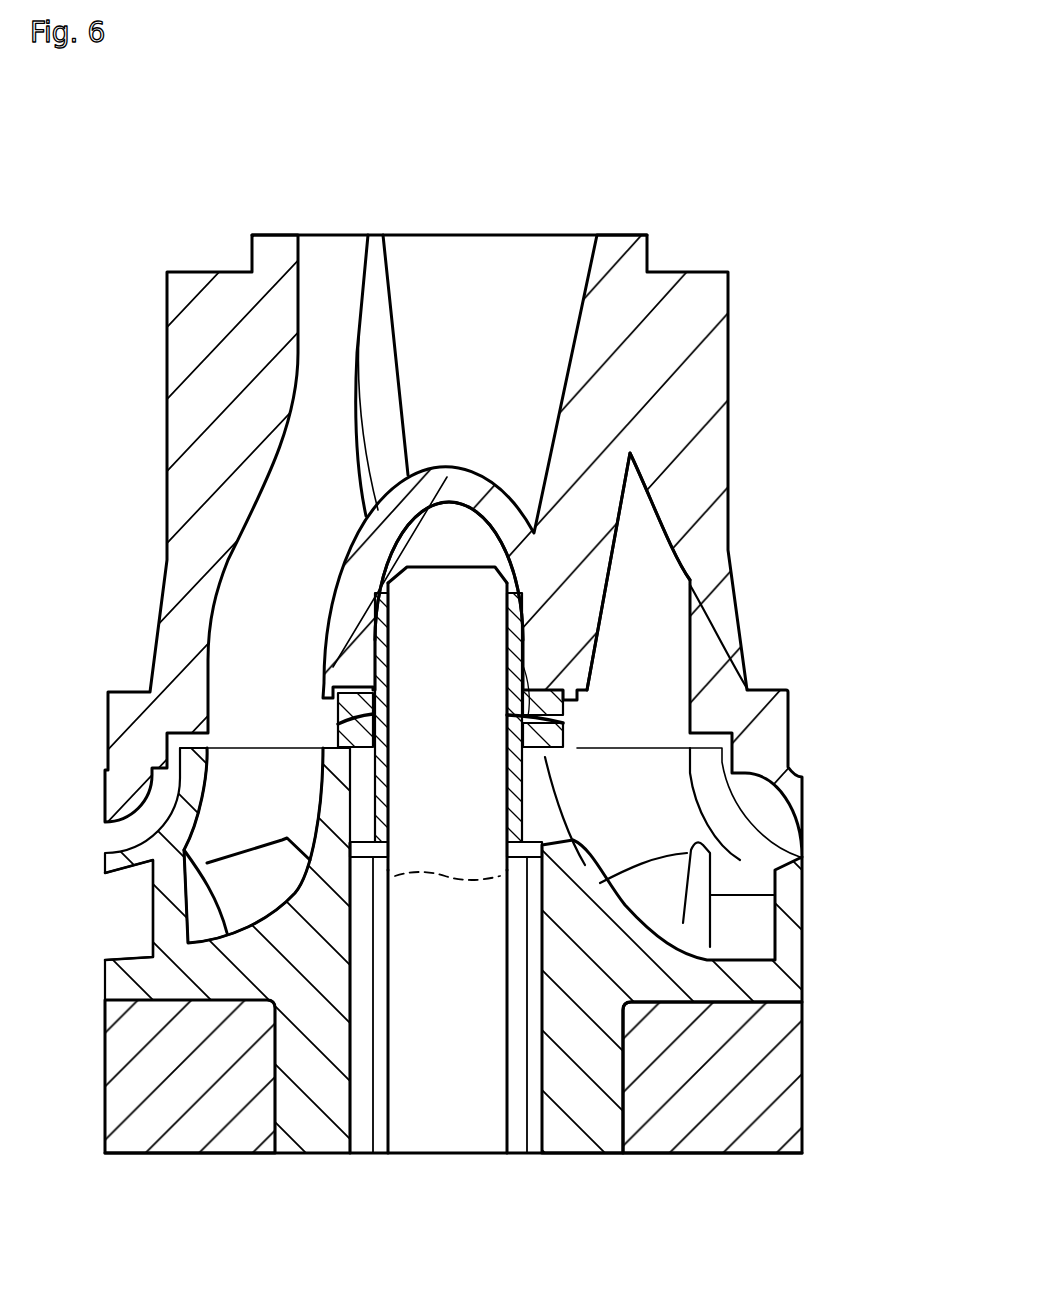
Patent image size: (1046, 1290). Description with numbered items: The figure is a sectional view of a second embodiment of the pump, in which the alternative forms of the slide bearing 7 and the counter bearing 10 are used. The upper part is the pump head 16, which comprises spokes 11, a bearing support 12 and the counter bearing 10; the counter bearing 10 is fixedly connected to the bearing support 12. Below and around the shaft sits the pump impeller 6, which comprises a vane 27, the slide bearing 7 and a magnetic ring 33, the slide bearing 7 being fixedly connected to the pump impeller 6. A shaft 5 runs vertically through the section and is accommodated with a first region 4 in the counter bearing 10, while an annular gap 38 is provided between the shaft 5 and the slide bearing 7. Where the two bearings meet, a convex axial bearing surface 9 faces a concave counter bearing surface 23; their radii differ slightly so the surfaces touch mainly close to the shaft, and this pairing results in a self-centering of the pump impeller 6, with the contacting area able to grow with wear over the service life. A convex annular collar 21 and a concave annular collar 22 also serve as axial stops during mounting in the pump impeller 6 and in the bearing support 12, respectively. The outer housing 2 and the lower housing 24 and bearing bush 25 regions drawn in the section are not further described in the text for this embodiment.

The housing 2 is at (625, 256).
The first region 4 is at (435, 678).
The shaft 5 is at (462, 927).
The pump impeller 6 is at (730, 828).
The slide bearing 7 is at (368, 766).
The convex axial bearing surface 9 is at (518, 647).
The counter bearing 10 is at (373, 641).
The spokes 11 is at (385, 413).
The bearing support 12 is at (533, 640).
The pump head 16 is at (151, 591).
The convex annular collar 21 is at (540, 750).
The concave annular collar 22 is at (563, 688).
The concave counter bearing surface 23 is at (377, 723).
The bearing housing 24 is at (570, 840).
The bearing bush 25 is at (528, 613).
The vane 27 is at (700, 922).
The magnetic ring 33 is at (723, 1067).
The annular gap 38 is at (365, 814).